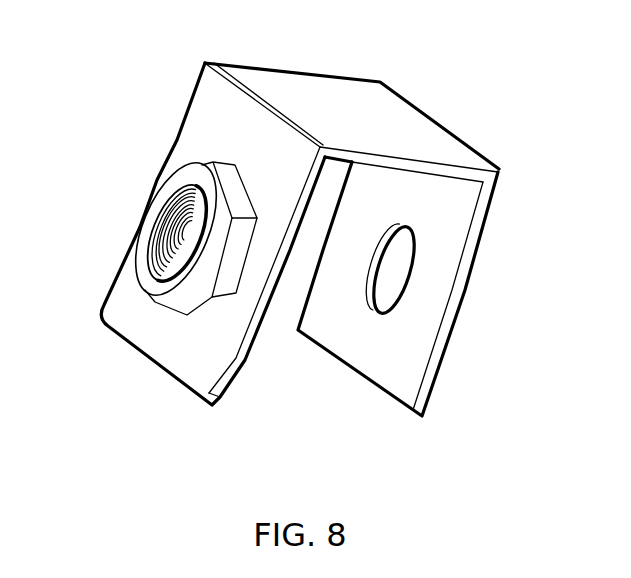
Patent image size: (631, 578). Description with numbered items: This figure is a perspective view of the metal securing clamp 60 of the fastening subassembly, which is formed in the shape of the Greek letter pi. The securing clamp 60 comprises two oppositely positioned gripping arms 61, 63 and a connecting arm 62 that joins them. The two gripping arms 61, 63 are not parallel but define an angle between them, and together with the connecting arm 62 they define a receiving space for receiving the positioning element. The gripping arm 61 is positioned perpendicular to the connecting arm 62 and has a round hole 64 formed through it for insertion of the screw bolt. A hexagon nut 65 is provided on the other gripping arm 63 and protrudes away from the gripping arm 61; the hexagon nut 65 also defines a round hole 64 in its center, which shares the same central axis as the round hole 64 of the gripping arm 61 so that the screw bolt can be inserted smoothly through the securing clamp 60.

The securing clamp 60 is at (309, 231).
The gripping arm 61 is at (381, 338).
The connecting arm 62 is at (340, 113).
The gripping arm 63 is at (183, 333).
The round hole 64 is at (203, 238).
The hexagon nut 65 is at (195, 183).